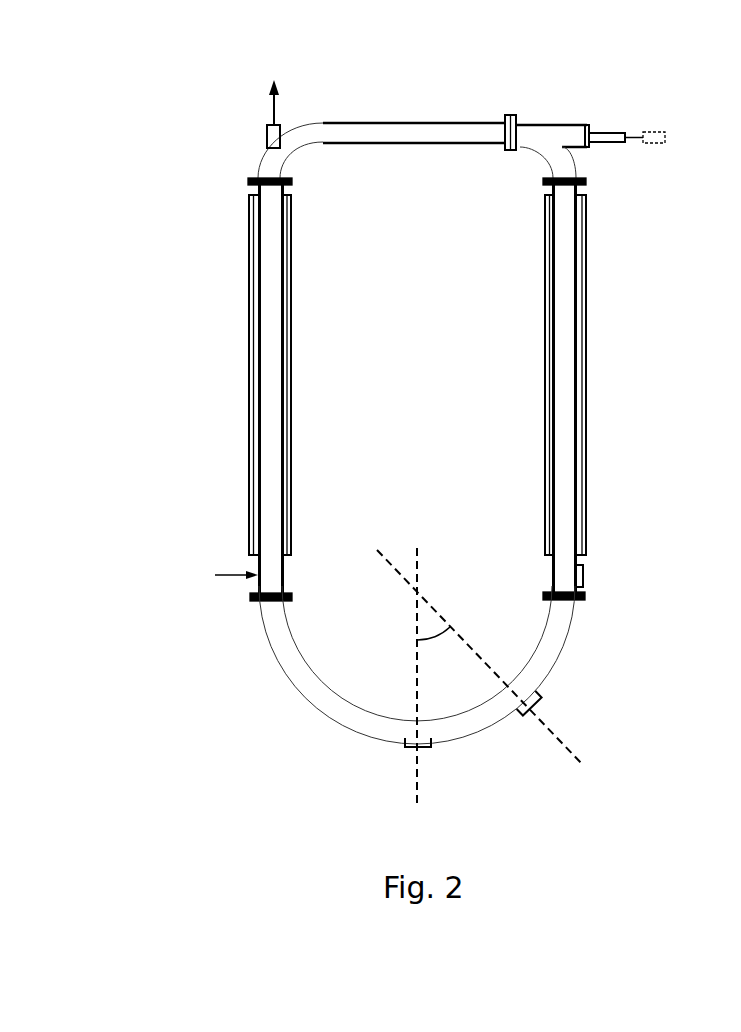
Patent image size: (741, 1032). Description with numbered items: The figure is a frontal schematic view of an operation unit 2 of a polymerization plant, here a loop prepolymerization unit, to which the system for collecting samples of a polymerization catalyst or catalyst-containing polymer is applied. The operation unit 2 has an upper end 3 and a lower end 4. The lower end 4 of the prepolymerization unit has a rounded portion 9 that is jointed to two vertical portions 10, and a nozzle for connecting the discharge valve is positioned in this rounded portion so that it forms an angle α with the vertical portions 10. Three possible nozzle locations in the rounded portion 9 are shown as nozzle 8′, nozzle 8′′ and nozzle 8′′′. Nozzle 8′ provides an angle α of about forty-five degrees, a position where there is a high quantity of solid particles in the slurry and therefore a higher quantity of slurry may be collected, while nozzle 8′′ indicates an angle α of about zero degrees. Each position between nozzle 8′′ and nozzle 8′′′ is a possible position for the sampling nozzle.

The operation unit 2 is at (178, 138).
The upper end 3 is at (205, 277).
The lower end 4 is at (330, 675).
The rounded portion 9 is at (385, 713).
The vertical portions 10 is at (283, 572).
The nozzle 8′ is at (538, 702).
The nozzle 8′′ is at (413, 745).
The nozzle 8′′′ is at (583, 575).